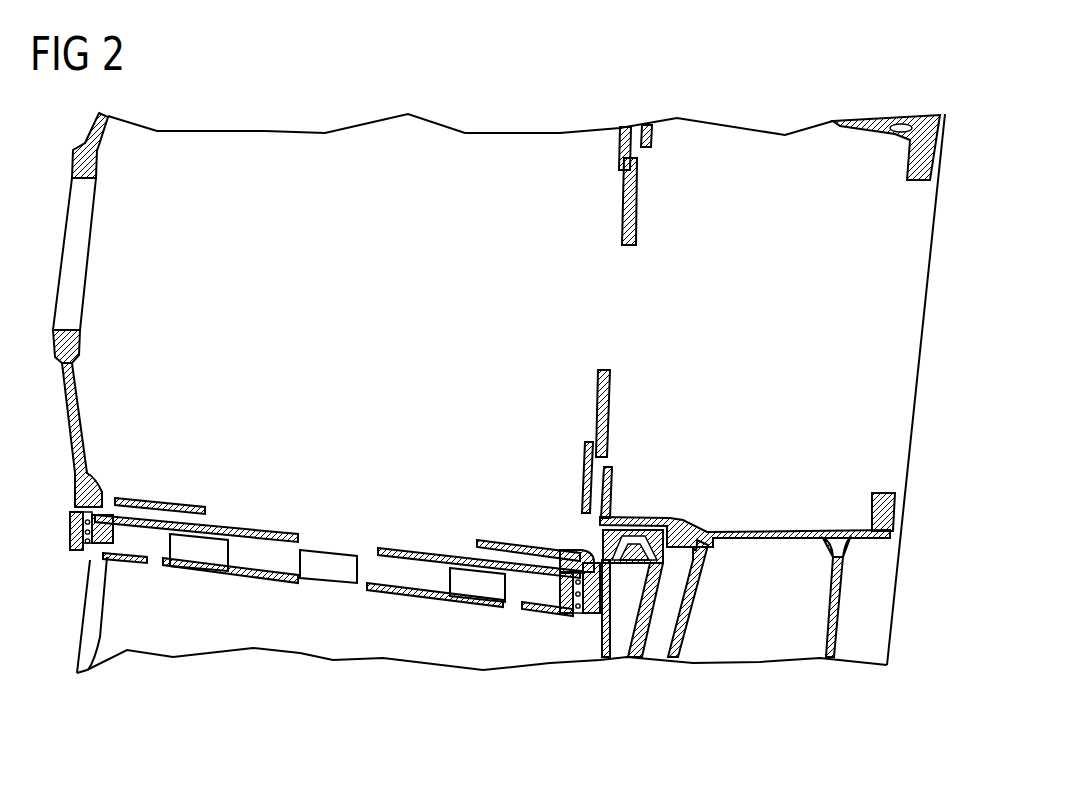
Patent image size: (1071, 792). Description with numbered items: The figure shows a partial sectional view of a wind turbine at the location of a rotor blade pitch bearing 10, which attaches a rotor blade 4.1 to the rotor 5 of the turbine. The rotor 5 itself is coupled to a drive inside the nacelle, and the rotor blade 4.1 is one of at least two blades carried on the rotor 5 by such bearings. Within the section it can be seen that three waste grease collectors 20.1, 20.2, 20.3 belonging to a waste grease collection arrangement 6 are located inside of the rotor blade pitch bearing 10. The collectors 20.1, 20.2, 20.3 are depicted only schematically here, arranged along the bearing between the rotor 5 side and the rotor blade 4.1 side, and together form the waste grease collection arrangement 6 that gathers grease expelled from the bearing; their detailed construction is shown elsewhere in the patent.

The rotor 5 is at (98, 416).
The rotor blade pitch bearing 10 is at (120, 545).
The waste grease collector 20.1 is at (197, 557).
The waste grease collector 20.2 is at (325, 573).
The waste grease collector 20.3 is at (482, 593).
The waste grease collection arrangement 6 is at (377, 530).
The rotor blade 4.1 is at (147, 642).